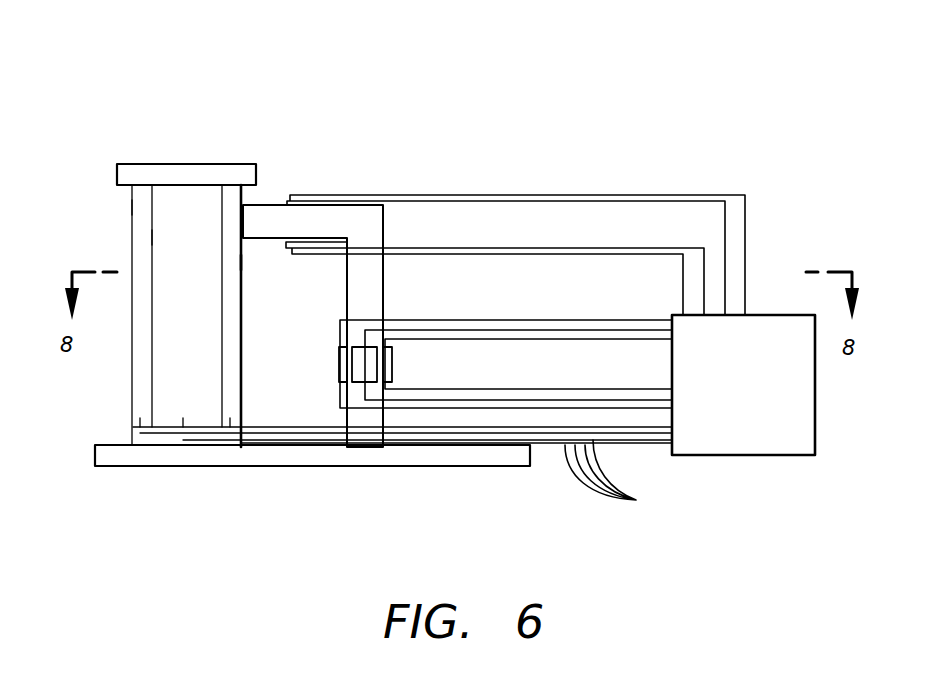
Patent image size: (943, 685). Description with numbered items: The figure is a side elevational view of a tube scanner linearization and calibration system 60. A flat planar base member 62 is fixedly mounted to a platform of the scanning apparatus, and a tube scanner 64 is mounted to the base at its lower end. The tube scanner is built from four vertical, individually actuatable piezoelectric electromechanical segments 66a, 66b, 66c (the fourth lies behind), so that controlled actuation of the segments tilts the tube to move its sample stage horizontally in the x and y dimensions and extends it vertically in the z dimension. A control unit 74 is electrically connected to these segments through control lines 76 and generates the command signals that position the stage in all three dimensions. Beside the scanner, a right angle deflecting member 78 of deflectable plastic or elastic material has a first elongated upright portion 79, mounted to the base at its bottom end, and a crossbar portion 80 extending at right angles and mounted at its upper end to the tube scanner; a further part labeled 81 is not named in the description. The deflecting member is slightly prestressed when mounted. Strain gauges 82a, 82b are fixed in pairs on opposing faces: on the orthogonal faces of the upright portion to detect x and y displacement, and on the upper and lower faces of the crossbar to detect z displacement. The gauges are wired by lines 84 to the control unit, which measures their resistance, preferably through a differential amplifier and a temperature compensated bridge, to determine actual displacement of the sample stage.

The tube scanner linearization and calibration system 60 is at (140, 122).
The base member 62 is at (213, 165).
The tube scanner 64 is at (131, 366).
The electromechanical segment 66a is at (140, 200).
The electromechanical segment 66b is at (167, 237).
The electromechanical segment 66c is at (236, 264).
The control unit 74 is at (816, 412).
The control lines 76 is at (617, 477).
The right angle deflecting member 78 is at (337, 421).
The first elongated upright portion 79 is at (347, 284).
The crossbar portion 80 is at (283, 205).
The right edge of support bracket 81 is at (385, 290).
The strain gauge 82a is at (329, 196).
The strain gauge 82b is at (318, 243).
The lines 84 is at (600, 195).